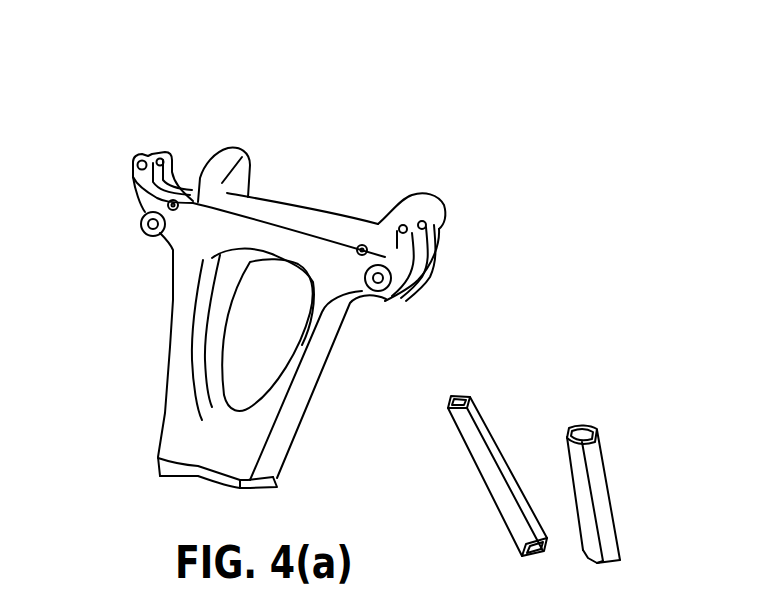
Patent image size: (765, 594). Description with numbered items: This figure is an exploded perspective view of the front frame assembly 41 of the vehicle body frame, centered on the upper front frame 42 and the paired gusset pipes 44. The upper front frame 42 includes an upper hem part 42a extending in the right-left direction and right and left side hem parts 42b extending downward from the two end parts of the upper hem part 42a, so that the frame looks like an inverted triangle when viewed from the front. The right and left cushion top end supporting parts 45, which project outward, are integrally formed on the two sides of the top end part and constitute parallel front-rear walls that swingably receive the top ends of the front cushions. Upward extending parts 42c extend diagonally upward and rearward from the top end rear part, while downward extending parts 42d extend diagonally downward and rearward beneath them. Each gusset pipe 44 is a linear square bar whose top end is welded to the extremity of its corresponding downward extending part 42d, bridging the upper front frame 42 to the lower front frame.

The front frame assembly 41 is at (466, 100).
The upper front frame 42 is at (160, 280).
The upper hem part 42a is at (292, 207).
The side hem part 42b is at (181, 324).
The upward extending part 42c is at (232, 150).
The downward extending part 42d is at (245, 295).
The gusset pipe 44 is at (492, 448).
The cushion top end supporting part 45 is at (141, 227).